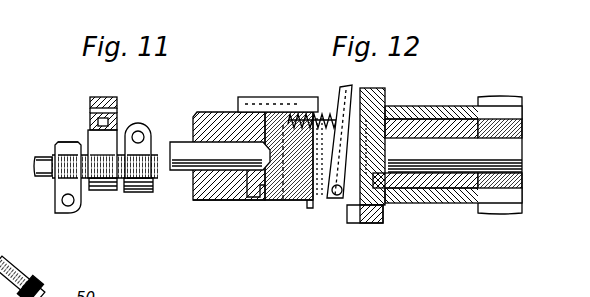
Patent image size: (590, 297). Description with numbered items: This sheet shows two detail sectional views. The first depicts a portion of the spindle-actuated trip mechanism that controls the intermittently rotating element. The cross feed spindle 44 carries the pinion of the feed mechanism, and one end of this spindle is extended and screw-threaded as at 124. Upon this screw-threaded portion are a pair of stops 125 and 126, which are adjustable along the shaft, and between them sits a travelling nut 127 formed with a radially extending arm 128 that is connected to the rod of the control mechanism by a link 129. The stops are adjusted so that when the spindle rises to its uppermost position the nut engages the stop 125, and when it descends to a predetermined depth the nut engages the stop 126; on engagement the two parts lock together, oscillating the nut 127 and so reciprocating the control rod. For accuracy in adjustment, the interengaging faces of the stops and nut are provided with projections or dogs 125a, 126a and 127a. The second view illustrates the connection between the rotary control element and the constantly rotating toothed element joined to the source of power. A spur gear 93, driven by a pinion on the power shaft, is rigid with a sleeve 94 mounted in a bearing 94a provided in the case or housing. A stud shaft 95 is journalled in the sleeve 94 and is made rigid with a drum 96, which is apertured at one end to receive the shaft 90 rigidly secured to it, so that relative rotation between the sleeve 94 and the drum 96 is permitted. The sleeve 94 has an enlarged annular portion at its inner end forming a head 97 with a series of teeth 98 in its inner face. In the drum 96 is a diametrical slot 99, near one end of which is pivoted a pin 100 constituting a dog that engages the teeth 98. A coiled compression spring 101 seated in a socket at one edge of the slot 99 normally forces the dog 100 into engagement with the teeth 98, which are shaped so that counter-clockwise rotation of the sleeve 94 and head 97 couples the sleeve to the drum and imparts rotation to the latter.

In FIG. 11, the cross feed spindle 44 is at (52, 176).
In FIG. 11, the stop 125 is at (58, 200).
In FIG. 11, the projection or dog 125a is at (76, 150).
In FIG. 11, the travelling nut 127 is at (97, 190).
In FIG. 11, the projection or dog 127a is at (101, 190).
In FIG. 11, the radially extending arm 128 is at (117, 122).
In FIG. 11, the link 129 is at (100, 97).
In FIG. 11, the screw-threaded portion 124 is at (151, 142).
In FIG. 11, the stop 126 is at (146, 192).
In FIG. 11, the projection or dog 126a is at (132, 192).
In FIG. 12, the drum 96 is at (285, 190).
In FIG. 12, the shaft 90 is at (183, 171).
In FIG. 12, the coiled compression spring 101 is at (313, 112).
In FIG. 12, the pin or dog 100 is at (330, 113).
In FIG. 12, the diametrical slot 99 is at (330, 186).
In FIG. 12, the head 97 is at (376, 96).
In FIG. 12, the series of teeth 98 is at (352, 222).
In FIG. 12, the sleeve 94 is at (402, 116).
In FIG. 12, the bearing 94a is at (454, 108).
In FIG. 12, the spur gear 93 is at (497, 104).
In FIG. 12, the stud shaft 95 is at (428, 162).